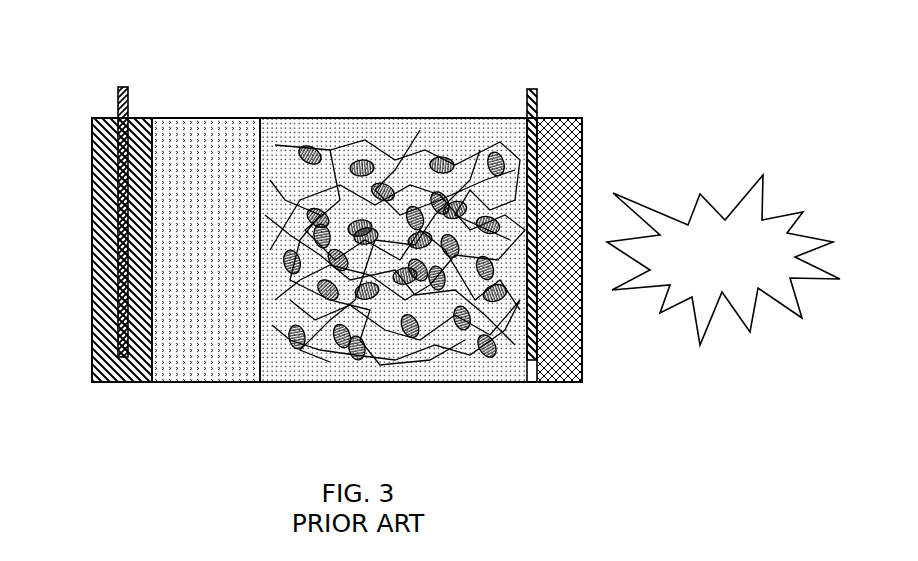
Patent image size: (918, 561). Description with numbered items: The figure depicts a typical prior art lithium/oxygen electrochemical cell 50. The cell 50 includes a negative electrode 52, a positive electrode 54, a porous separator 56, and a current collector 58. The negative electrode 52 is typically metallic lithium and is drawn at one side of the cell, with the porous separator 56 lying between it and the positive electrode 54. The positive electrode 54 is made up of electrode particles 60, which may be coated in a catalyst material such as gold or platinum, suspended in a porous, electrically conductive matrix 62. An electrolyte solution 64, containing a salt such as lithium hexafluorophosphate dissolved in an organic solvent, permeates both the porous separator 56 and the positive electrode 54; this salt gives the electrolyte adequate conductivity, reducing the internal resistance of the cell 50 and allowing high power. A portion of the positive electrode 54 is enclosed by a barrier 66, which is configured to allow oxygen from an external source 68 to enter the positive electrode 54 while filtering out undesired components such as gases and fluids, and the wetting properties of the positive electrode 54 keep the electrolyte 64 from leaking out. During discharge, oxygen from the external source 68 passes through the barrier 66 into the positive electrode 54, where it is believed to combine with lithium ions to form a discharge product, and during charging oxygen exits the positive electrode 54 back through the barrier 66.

The lithium/oxygen electrochemical cell 50 is at (132, 67).
The negative electrode 52 is at (92, 208).
The positive electrode 54 is at (487, 382).
The porous separator 56 is at (192, 382).
The current collector 58 is at (537, 105).
The electrode particles 60 is at (300, 148).
The porous electrically conductive matrix 62 is at (397, 148).
The electrolyte solution 64 is at (388, 382).
The barrier 66 is at (582, 130).
The external source 68 is at (765, 187).